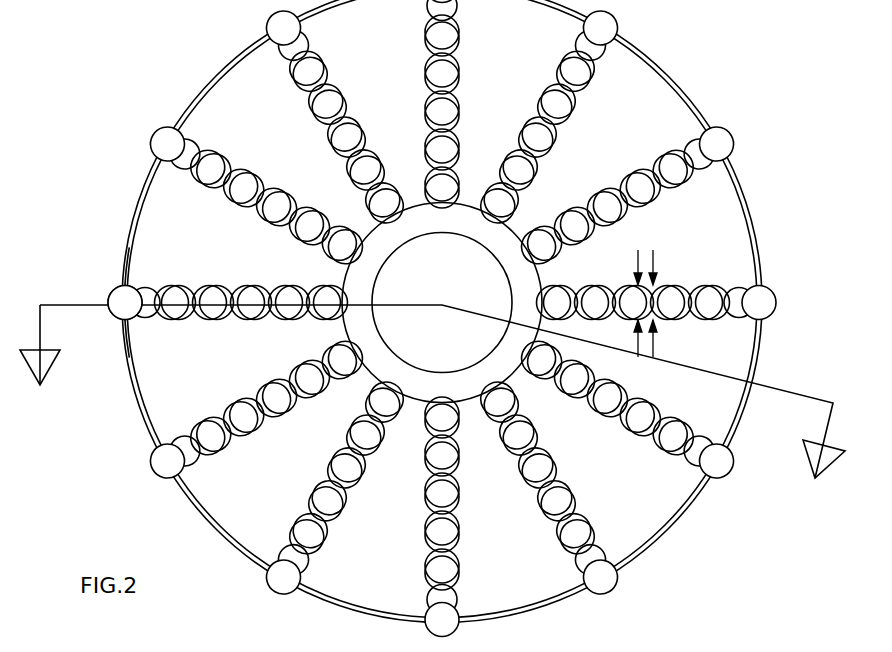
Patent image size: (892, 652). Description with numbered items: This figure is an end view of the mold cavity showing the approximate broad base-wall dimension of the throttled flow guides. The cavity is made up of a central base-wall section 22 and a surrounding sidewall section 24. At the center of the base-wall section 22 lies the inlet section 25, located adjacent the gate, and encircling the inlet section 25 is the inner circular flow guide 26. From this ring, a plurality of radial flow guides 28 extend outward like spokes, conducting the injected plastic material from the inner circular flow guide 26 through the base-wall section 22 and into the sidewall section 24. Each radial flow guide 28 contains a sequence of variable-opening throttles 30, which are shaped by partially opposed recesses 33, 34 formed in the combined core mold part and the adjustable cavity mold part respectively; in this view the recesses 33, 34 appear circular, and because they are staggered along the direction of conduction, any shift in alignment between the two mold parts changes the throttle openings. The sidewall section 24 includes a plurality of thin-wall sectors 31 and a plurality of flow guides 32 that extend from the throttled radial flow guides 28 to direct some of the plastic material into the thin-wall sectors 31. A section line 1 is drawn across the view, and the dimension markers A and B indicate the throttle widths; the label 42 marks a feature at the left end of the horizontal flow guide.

The section line 1 is at (443, 391).
The base-wall section 22 is at (386, 78).
The sidewall section 24 is at (143, 182).
The inlet section 25 is at (447, 351).
The inner circular flow guide 26 is at (382, 363).
The radial flow guides 28 is at (277, 280).
The variable-opening throttles 30 is at (232, 314).
The thin-wall sectors 31 is at (123, 355).
The flow guides 32 is at (108, 290).
The recess 33 is at (138, 288).
The recess 34 is at (128, 255).
The rim knob 42 is at (105, 302).
The coil diameter A is at (656, 294).
The coil diameter B is at (632, 294).